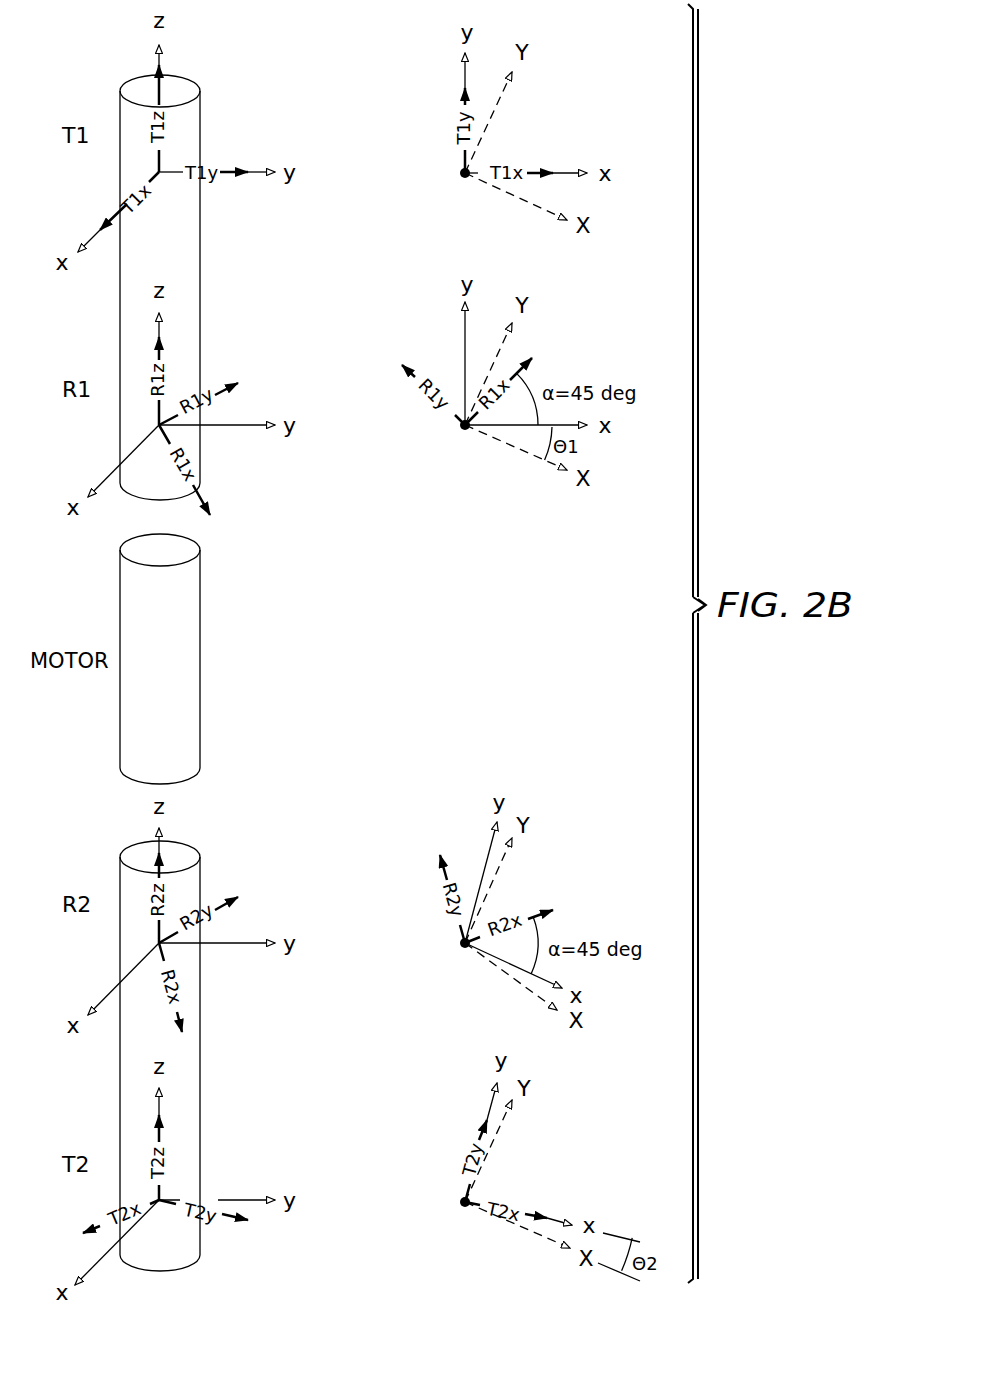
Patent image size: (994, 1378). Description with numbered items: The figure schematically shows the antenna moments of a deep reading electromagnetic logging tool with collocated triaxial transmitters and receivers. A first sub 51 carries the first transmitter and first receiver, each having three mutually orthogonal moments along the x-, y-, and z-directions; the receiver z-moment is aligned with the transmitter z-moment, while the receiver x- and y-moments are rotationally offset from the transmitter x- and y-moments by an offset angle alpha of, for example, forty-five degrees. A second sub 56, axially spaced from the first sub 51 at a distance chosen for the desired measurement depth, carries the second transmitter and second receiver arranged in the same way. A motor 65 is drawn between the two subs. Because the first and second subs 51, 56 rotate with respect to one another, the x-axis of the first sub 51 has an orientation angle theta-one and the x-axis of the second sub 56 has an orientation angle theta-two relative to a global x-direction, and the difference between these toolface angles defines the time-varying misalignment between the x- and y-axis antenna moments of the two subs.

The first sub 51 is at (200, 290).
The motor 65 is at (200, 660).
The second sub 56 is at (200, 1066).